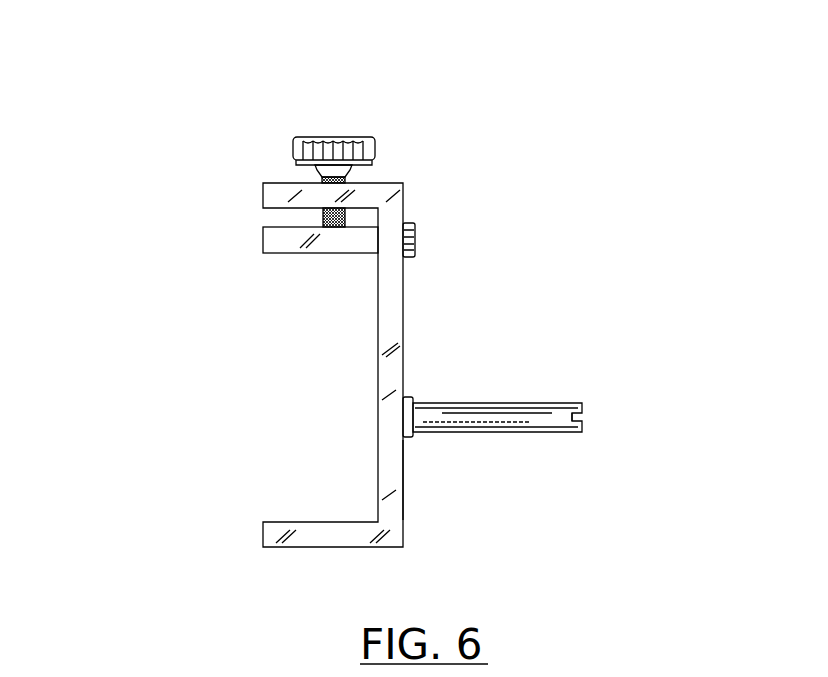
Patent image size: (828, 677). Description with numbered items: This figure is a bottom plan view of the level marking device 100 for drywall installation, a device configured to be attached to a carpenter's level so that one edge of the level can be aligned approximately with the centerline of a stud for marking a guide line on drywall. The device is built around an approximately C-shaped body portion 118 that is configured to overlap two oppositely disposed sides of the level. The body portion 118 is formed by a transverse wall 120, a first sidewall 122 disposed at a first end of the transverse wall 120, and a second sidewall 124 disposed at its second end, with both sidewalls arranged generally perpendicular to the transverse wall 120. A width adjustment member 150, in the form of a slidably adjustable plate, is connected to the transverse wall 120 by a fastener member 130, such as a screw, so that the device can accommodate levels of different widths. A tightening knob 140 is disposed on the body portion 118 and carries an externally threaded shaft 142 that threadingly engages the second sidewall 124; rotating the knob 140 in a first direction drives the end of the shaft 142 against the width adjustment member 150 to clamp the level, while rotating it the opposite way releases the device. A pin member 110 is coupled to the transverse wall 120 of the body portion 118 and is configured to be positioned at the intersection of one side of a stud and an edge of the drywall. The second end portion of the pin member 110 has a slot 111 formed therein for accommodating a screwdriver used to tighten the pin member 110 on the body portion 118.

The level marking device 100 is at (507, 525).
The pin member 110 is at (533, 402).
The slot 111 is at (583, 417).
The body portion 118 is at (403, 458).
The transverse wall 120 is at (387, 398).
The first sidewall 122 is at (300, 548).
The second sidewall 124 is at (263, 193).
The fastener member 130 is at (415, 236).
The tightening knob 140 is at (308, 138).
The externally threaded shaft 142 is at (323, 215).
The width adjustment member 150 is at (320, 253).